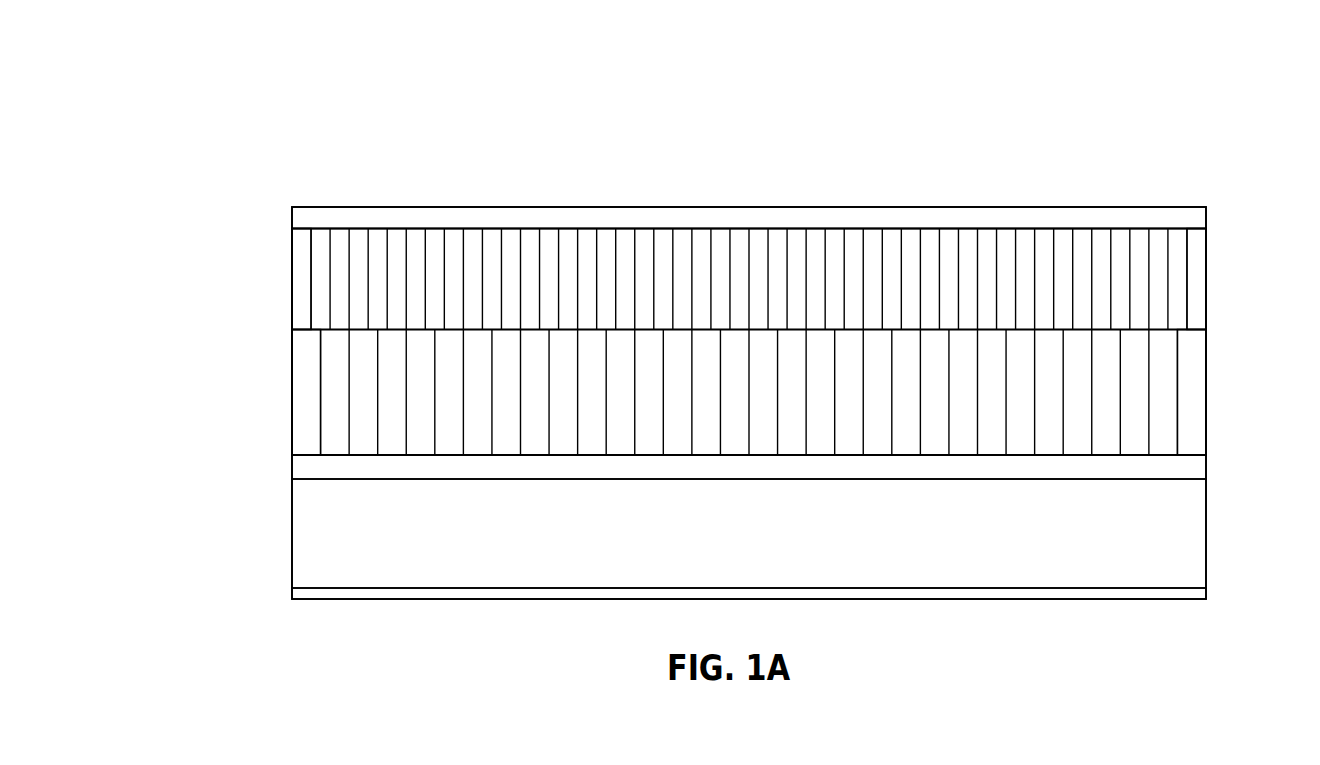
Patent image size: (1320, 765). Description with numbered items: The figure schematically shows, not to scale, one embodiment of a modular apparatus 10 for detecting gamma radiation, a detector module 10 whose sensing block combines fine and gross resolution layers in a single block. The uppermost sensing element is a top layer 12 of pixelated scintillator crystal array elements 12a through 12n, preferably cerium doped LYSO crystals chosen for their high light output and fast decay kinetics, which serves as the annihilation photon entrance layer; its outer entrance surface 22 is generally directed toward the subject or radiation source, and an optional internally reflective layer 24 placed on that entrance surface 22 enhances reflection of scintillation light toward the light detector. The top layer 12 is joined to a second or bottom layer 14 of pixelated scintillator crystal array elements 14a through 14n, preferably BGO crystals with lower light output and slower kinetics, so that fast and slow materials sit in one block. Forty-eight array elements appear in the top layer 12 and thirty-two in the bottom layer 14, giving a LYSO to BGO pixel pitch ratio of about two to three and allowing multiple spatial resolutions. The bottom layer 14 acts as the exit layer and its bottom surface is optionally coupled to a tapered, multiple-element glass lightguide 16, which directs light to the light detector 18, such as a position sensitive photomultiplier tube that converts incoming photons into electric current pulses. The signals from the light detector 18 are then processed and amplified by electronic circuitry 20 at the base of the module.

The modular apparatus 10 is at (196, 96).
The entrance surface 22 is at (721, 186).
The internally reflective layer 24 is at (1071, 216).
The top layer 12 is at (1206, 262).
The pixelated scintillator crystal array element 12a is at (298, 243).
The pixelated scintillator crystal array element 12n is at (1203, 247).
The bottom layer 14 is at (1206, 370).
The pixelated scintillator crystal array element 14a is at (298, 348).
The pixelated scintillator crystal array element 14n is at (1203, 353).
The lightguide 16 is at (1206, 466).
The light detector 18 is at (1206, 528).
The electronic circuitry 20 is at (1206, 594).